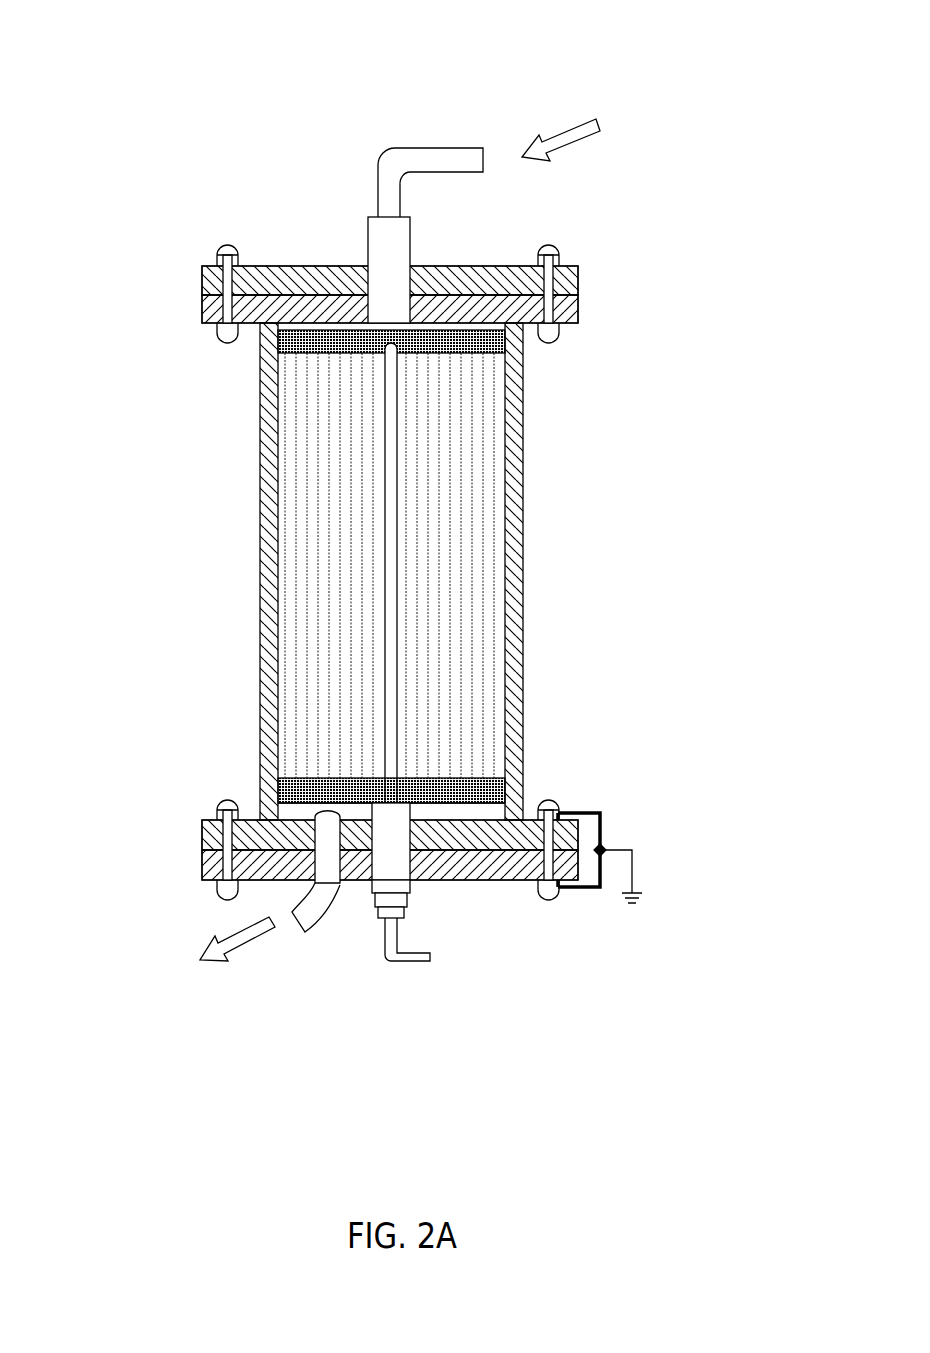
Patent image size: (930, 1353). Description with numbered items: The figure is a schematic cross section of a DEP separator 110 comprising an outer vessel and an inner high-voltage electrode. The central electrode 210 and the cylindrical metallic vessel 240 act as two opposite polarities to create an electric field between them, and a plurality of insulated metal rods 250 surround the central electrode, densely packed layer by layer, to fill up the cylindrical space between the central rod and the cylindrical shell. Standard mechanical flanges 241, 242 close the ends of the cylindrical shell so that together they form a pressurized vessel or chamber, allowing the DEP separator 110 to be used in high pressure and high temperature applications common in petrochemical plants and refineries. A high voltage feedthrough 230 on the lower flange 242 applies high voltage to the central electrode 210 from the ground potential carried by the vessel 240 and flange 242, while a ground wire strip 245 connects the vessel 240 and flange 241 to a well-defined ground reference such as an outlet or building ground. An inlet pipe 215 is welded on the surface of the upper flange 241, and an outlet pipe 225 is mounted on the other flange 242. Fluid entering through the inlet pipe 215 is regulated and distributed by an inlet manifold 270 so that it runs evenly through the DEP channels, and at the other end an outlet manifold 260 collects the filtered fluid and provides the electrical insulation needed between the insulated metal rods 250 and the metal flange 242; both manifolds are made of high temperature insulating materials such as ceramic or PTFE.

The DEP separator 110 is at (176, 77).
The inlet pipe 215 is at (378, 172).
The flange 241 is at (203, 272).
The flange 242 is at (203, 870).
The metallic vessel 240 is at (264, 450).
The inlet manifold 270 is at (495, 347).
The insulated metal rods 250 is at (312, 597).
The electrode 210 is at (385, 720).
The outlet manifold 260 is at (510, 790).
The ground wire strip 245 is at (602, 823).
The high voltage feedthrough 230 is at (402, 888).
The outlet pipe 225 is at (313, 920).